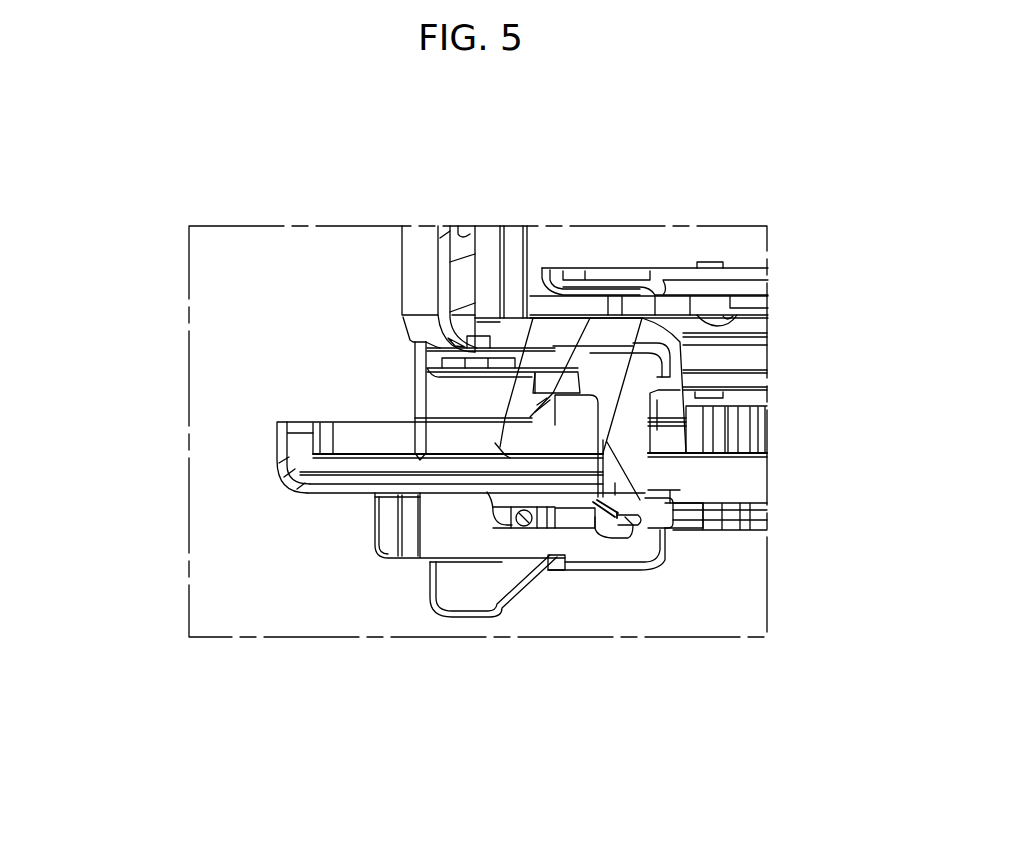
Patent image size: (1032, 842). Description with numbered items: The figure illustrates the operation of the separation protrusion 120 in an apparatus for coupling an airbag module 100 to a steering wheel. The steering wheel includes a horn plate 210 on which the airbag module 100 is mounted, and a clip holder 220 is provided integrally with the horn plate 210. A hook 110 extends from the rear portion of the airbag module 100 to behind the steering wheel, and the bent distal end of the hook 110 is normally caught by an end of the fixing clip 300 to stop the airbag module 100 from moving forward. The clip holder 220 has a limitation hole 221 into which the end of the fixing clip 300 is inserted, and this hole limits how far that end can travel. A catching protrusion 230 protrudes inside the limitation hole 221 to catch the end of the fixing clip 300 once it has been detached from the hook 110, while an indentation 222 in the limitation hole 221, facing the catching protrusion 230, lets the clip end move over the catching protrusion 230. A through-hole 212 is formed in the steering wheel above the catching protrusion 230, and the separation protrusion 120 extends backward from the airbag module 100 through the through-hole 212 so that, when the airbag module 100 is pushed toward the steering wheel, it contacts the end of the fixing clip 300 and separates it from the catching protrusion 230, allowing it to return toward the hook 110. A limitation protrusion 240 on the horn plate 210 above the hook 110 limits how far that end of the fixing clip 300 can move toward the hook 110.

The airbag module 100 is at (587, 220).
The hook 110 is at (467, 600).
The separation protrusion 120 is at (622, 420).
The horn plate 210 is at (330, 494).
The through-hole 212 is at (615, 490).
The clip holder 220 is at (397, 527).
The limitation hole 221 is at (573, 517).
The indentation 222 is at (635, 520).
The catching protrusion 230 is at (596, 552).
The limitation protrusion 240 is at (498, 497).
The fixing clip 300 is at (633, 520).